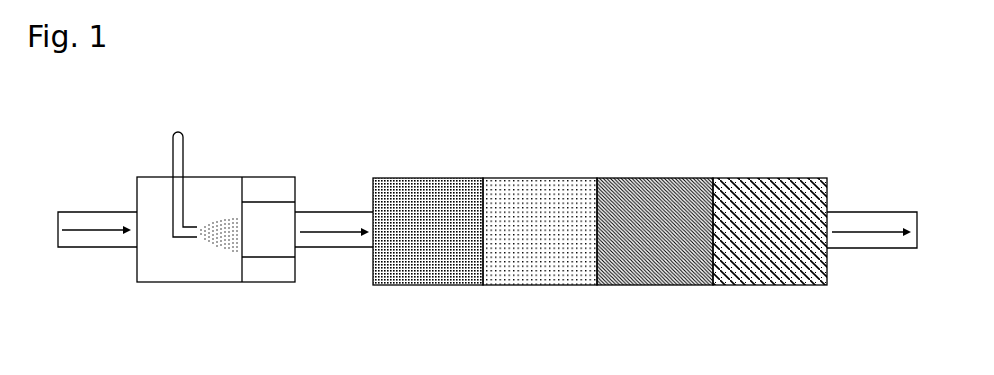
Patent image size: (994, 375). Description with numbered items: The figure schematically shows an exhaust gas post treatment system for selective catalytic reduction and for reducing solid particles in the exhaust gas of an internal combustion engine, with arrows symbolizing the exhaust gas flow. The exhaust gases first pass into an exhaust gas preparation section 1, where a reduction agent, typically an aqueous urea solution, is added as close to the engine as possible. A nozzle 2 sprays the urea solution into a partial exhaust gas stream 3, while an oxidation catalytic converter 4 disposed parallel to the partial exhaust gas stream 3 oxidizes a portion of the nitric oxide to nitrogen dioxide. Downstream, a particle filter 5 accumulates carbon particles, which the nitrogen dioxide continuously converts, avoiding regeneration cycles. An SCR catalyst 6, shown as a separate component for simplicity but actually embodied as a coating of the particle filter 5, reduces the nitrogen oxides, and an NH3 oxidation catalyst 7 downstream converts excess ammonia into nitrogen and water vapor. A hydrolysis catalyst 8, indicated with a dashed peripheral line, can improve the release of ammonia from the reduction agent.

The exhaust gas preparation section 1 is at (118, 178).
The nozzle 2 is at (198, 230).
The partial exhaust gas stream 3 is at (267, 232).
The oxidation catalytic converter 4 is at (253, 188).
The particle filter 5 is at (537, 188).
The SCR catalyst 6 is at (672, 180).
The NH3 oxidation catalyst 7 is at (780, 180).
The hydrolysis catalyst 8 is at (430, 180).